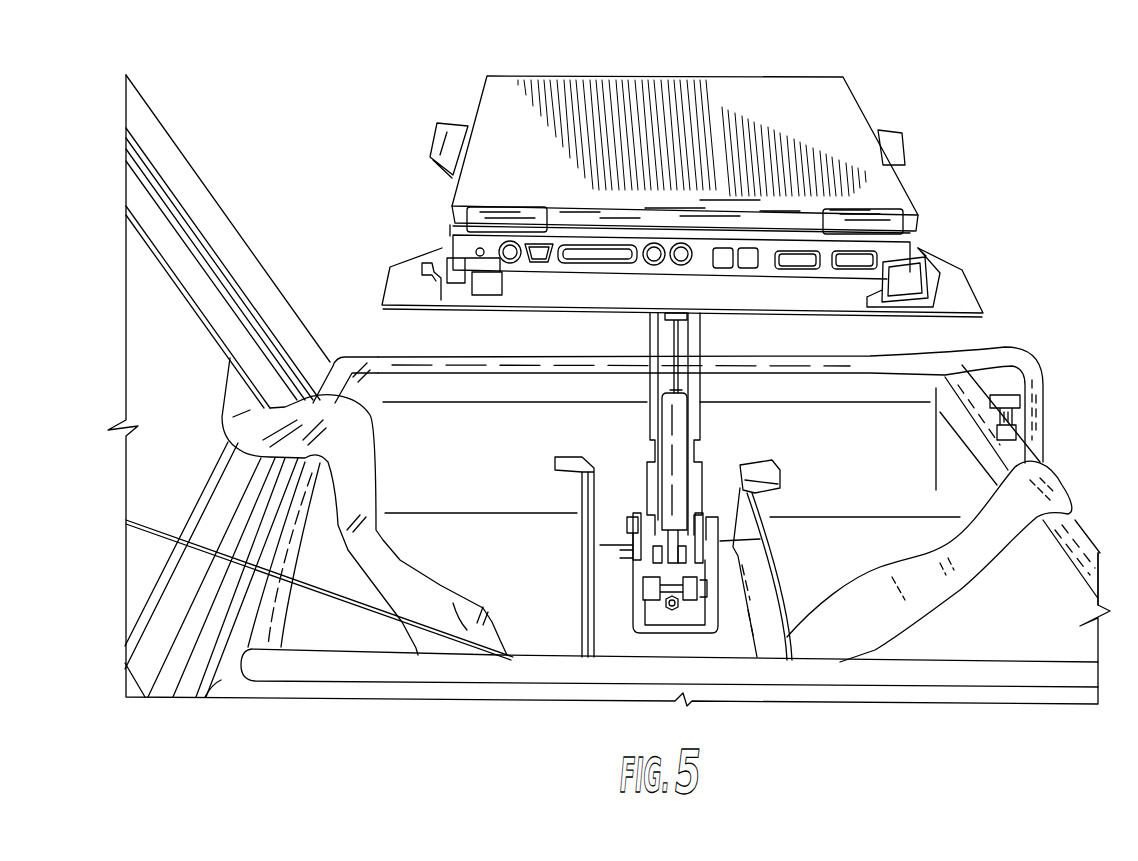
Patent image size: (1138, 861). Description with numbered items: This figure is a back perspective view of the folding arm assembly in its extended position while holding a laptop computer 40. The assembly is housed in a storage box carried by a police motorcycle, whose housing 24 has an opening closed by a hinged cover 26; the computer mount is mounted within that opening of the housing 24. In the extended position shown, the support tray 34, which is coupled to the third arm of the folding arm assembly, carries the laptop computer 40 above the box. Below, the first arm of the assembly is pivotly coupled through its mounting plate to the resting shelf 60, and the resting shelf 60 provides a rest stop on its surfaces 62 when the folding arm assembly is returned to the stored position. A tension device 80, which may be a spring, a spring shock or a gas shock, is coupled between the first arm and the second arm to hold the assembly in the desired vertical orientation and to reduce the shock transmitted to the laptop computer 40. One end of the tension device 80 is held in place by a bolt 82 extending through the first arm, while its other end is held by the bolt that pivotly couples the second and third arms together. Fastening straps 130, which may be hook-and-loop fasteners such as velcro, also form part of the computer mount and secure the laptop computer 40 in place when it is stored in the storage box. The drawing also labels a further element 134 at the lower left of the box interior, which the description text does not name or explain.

The housing 24 is at (1073, 533).
The cover 26 is at (162, 150).
The support tray 34 is at (973, 293).
The laptop computer 40 is at (660, 105).
The resting shelf 60 is at (730, 643).
The surface 62 is at (573, 458).
The tension device 80 is at (672, 417).
The bolt 82 is at (627, 550).
The fastening straps 130 is at (863, 613).
The seat 134 is at (478, 655).